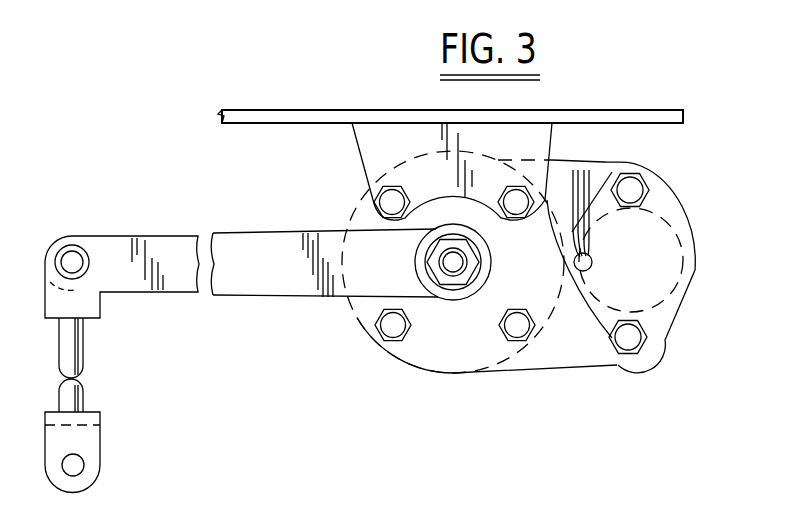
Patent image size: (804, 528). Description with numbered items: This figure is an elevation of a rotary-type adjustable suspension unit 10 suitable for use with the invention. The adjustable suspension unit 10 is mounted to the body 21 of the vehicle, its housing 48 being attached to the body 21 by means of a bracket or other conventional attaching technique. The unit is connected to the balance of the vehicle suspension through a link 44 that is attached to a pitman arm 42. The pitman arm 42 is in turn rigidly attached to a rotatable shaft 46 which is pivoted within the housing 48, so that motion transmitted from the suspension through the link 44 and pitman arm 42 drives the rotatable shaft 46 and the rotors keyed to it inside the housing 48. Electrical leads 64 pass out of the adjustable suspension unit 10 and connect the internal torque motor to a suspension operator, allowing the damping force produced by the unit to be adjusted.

The adjustable suspension unit 10 is at (325, 60).
The body 21 is at (590, 110).
The pitman arm 42 is at (265, 231).
The link 44 is at (82, 365).
The rotatable shaft 46 is at (455, 270).
The housing 48 is at (412, 362).
The electrical leads 64 is at (592, 164).